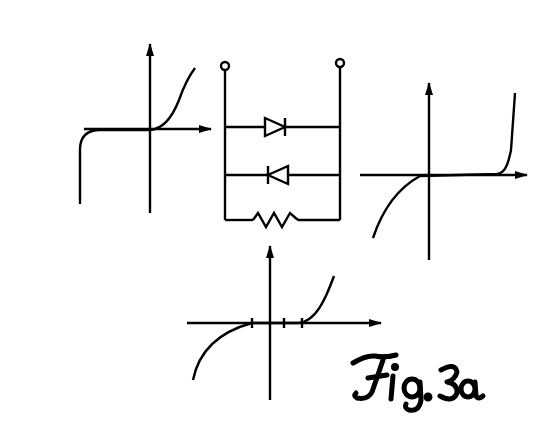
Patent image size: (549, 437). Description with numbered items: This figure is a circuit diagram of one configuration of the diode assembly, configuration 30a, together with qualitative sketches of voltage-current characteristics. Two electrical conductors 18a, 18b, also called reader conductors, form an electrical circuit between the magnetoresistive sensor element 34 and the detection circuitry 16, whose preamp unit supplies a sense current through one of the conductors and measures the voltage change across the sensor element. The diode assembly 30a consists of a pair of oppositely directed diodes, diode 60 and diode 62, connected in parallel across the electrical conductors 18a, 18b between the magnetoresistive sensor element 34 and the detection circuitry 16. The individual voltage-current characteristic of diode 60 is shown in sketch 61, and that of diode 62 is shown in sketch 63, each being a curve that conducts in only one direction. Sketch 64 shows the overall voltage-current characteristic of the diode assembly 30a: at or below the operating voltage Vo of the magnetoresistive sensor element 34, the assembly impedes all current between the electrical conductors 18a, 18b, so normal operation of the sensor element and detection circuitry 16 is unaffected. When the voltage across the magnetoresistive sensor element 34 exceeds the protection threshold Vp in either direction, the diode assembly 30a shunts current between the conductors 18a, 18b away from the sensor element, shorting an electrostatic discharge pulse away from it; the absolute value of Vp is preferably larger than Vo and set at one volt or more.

The detection circuitry 16 is at (224, 62).
The electrical conductor 18a is at (228, 79).
The electrical conductor 18b is at (342, 92).
The diode assembly configuration 30a is at (297, 97).
The diode 60 is at (275, 116).
The diode 62 is at (281, 163).
The magnetoresistive sensor element 34 is at (292, 222).
The sketch 61 is at (117, 103).
The sketch 63 is at (475, 110).
The sketch 64 is at (238, 302).